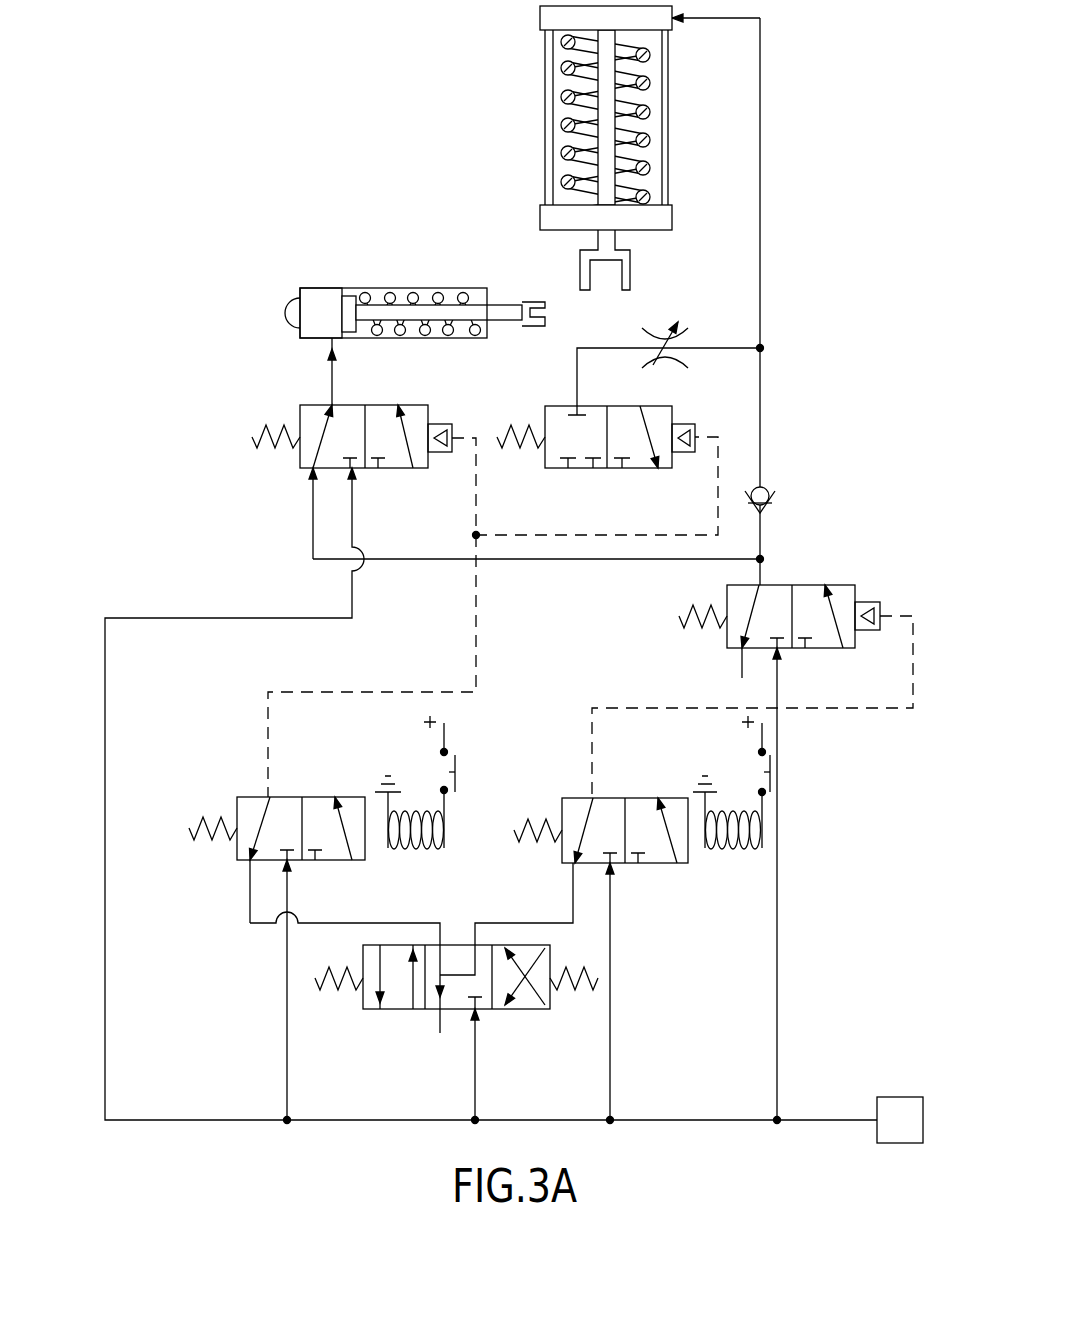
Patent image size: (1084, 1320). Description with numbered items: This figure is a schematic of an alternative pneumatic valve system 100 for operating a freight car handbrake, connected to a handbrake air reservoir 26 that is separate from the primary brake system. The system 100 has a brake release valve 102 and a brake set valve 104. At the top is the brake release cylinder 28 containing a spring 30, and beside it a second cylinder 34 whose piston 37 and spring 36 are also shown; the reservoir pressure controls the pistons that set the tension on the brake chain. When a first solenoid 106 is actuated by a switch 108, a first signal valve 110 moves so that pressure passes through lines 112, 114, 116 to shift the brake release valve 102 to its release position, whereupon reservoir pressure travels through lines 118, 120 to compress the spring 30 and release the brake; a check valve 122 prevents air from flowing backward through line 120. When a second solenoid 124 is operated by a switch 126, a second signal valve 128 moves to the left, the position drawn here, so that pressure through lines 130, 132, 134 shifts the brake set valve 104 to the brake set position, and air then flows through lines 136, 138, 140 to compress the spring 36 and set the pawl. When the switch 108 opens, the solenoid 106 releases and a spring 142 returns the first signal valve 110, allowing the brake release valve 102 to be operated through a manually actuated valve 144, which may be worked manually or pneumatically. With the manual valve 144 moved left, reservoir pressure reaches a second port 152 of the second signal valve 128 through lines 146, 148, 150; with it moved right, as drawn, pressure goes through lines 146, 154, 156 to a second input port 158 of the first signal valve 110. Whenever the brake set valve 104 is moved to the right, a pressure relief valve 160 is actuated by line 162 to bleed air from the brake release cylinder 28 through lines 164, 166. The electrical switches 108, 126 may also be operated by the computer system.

The handbrake air reservoir 26 is at (900, 1120).
The brake release cylinder 28 is at (559, 145).
The spring 30 is at (565, 97).
The cylinder 34 is at (415, 280).
The spring 36 is at (390, 293).
The piston 37 is at (346, 306).
The pneumatic valve system 100 is at (833, 213).
The brake release valve 102 is at (800, 585).
The brake set valve 104 is at (352, 412).
The first solenoid 106 is at (742, 852).
The switch 108 is at (779, 768).
The first signal valve 110 is at (648, 838).
The line 112 is at (612, 1060).
The line 114 is at (594, 738).
The line 116 is at (868, 600).
The line 118 is at (779, 1050).
The line 120 is at (762, 420).
The check valve 122 is at (768, 492).
The second solenoid 124 is at (446, 828).
The switch 126 is at (440, 770).
The second signal valve 128 is at (277, 796).
The line 130 is at (290, 1080).
The line 132 is at (262, 815).
The line 134 is at (492, 615).
The line 136 is at (107, 1005).
The line 138 is at (410, 425).
The line 140 is at (330, 371).
The spring 142 is at (601, 845).
The manually actuated valve 144 is at (515, 1011).
The line 146 is at (477, 1088).
The line 148 is at (457, 1002).
The line 150 is at (370, 922).
The second port 152 is at (248, 862).
The line 154 is at (414, 1001).
The line 156 is at (482, 922).
The second input port 158 is at (576, 865).
The pressure relief valve 160 is at (603, 443).
The line 162 is at (658, 536).
The line 164 is at (708, 347).
The line 166 is at (649, 428).